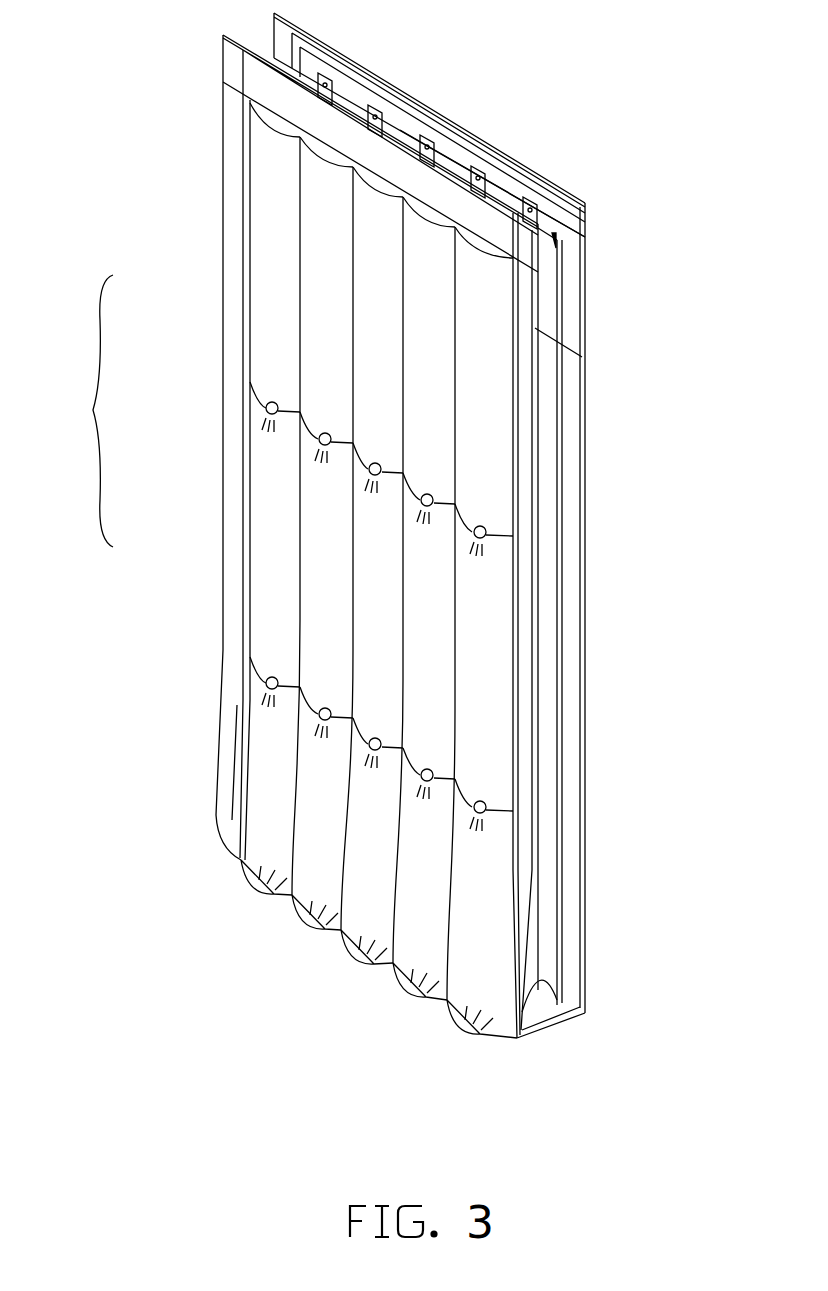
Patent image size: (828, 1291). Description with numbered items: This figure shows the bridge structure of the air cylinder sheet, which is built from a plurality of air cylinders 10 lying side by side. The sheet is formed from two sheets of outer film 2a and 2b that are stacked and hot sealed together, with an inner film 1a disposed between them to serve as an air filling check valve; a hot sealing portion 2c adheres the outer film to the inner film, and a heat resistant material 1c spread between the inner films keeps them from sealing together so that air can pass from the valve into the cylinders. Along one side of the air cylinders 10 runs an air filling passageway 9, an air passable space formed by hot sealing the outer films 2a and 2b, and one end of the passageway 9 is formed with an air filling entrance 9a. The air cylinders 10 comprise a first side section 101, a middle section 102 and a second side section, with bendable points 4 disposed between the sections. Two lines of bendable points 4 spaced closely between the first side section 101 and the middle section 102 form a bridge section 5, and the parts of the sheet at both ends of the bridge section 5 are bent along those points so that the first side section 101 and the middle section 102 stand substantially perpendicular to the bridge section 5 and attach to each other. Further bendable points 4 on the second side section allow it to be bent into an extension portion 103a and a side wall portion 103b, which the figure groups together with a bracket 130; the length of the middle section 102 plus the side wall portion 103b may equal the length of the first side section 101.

The inner film 1a is at (568, 305).
The heat resistant material 1c is at (376, 115).
The outer film 2a is at (435, 106).
The outer film 2b is at (466, 124).
The hot sealing portion 2c is at (326, 84).
The air filling passageway 9 is at (512, 182).
The air filling entrance 9a is at (578, 240).
The first side section 101 is at (548, 672).
The middle section 102 is at (258, 757).
The extension portion 103a is at (264, 290).
The side wall portion 103b is at (258, 555).
The pocket array 130 is at (79, 411).
The air cylinders 10 is at (252, 853).
The bendable points 4 is at (364, 948).
The bridge section 5 is at (535, 993).